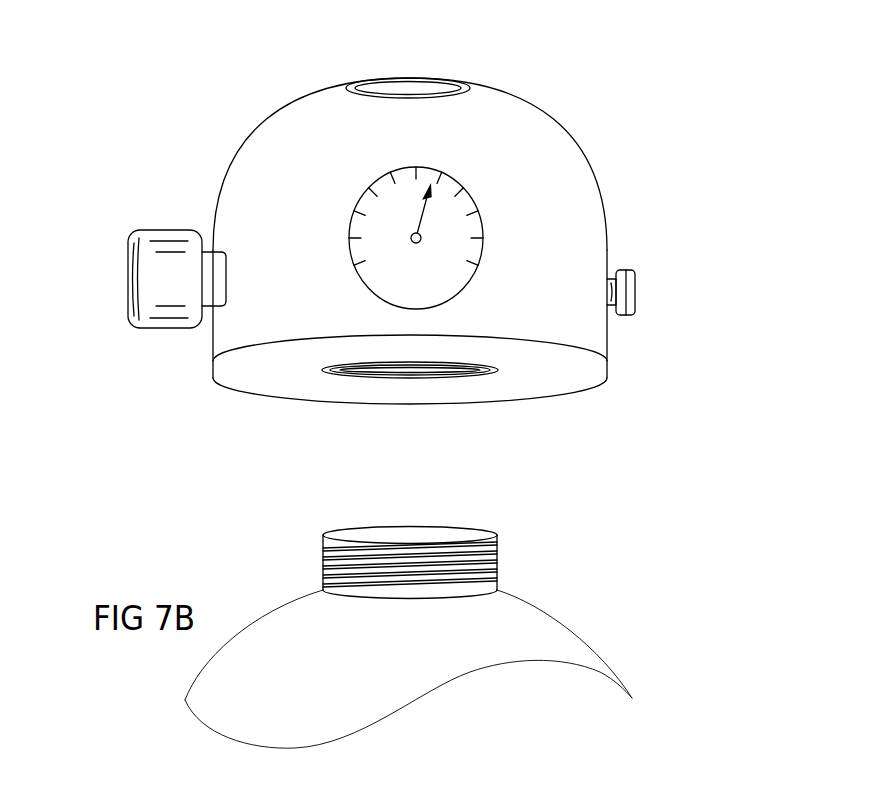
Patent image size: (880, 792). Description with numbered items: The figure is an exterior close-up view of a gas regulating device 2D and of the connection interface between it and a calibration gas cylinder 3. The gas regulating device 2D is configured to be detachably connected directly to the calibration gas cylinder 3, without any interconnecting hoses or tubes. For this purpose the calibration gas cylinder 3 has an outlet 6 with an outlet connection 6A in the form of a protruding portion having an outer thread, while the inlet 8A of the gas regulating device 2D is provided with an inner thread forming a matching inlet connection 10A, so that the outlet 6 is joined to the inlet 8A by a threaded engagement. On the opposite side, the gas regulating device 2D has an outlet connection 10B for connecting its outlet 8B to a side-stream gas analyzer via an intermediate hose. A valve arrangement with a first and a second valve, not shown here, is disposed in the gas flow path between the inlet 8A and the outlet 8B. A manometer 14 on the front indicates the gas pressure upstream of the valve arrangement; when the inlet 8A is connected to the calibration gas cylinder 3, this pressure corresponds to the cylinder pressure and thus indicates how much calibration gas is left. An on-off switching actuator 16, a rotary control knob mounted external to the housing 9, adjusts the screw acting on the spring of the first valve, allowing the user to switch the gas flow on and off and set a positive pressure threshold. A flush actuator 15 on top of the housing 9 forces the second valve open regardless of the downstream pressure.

The gas regulating device 2D is at (626, 136).
The gas regulating device housing 9 is at (254, 143).
The flush actuator 15 is at (431, 85).
The manometer 14 is at (430, 289).
The on-off switching actuator 16 is at (165, 229).
The outlet connection 10B is at (631, 268).
The outlet 8B is at (656, 290).
The inlet 8A is at (416, 380).
The inlet connection 10A is at (458, 377).
The outlet 6 is at (416, 525).
The outlet connection 6A is at (326, 570).
The calibration gas cylinder 3 is at (615, 590).